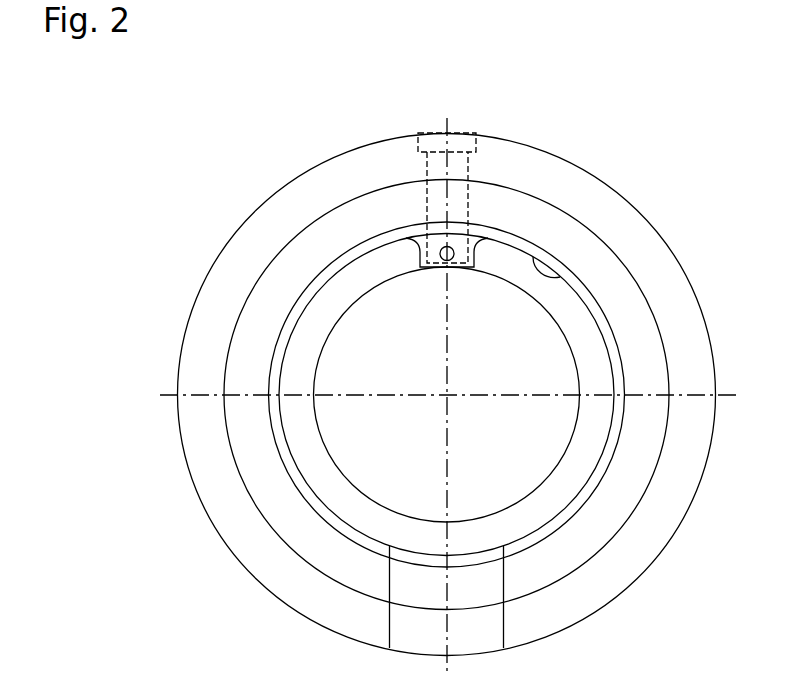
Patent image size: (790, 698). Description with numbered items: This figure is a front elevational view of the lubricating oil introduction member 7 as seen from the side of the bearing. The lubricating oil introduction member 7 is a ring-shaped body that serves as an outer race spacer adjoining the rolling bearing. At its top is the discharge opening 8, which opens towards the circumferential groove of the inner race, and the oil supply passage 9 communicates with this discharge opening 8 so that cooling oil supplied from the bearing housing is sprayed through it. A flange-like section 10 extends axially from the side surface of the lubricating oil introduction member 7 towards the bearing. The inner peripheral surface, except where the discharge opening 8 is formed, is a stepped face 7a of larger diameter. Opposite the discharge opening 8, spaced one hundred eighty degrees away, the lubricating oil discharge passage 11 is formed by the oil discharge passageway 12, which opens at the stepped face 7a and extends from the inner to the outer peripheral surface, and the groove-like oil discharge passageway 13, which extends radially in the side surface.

The lubricating oil introduction member 7 is at (261, 157).
The stepped face 7a is at (561, 277).
The discharge opening 8 is at (450, 258).
The oil supply passage 9 is at (455, 170).
The flange-like section 10 is at (368, 238).
The lubricating oil discharge passage 11 is at (562, 605).
The oil discharge passageway 12 is at (487, 583).
The groove-like oil discharge passageway 13 is at (483, 635).